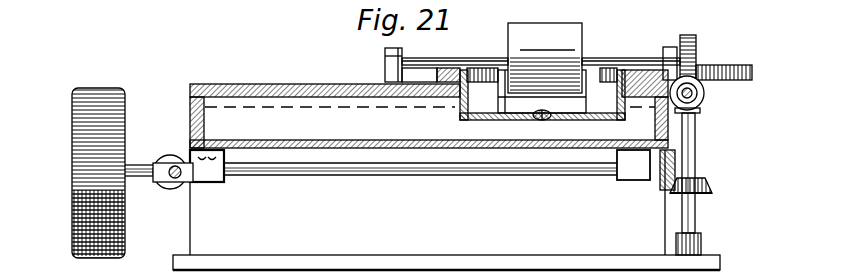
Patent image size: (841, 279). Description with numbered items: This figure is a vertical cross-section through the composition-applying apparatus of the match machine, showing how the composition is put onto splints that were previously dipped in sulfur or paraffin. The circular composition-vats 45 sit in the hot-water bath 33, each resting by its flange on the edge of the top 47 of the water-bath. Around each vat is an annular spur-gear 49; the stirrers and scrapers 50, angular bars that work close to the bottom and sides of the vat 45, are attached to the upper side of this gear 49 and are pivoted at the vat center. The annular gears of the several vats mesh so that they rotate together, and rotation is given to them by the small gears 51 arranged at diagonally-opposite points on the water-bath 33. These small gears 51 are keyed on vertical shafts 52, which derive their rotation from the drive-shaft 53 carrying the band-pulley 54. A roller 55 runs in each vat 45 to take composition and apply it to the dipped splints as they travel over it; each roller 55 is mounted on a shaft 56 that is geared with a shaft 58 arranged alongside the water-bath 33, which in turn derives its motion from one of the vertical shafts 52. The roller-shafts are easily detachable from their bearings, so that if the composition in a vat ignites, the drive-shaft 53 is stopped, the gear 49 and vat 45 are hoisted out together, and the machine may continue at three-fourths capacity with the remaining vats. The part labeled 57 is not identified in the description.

The hot-water bath 33 is at (429, 139).
The composition-vat 45 is at (478, 105).
The top of the water-bath 47 is at (320, 75).
The annular spur-gear 49 is at (386, 73).
The stirrers and scrapers 50 is at (503, 105).
The small gear 51 is at (722, 79).
The vertical shaft 52 is at (697, 152).
The drive-shaft 53 is at (441, 168).
The band-pulley 54 is at (80, 137).
The roller 55 is at (545, 58).
The roller-shaft 56 is at (605, 62).
The knurled head 57 is at (696, 50).
The shaft 58 is at (695, 95).